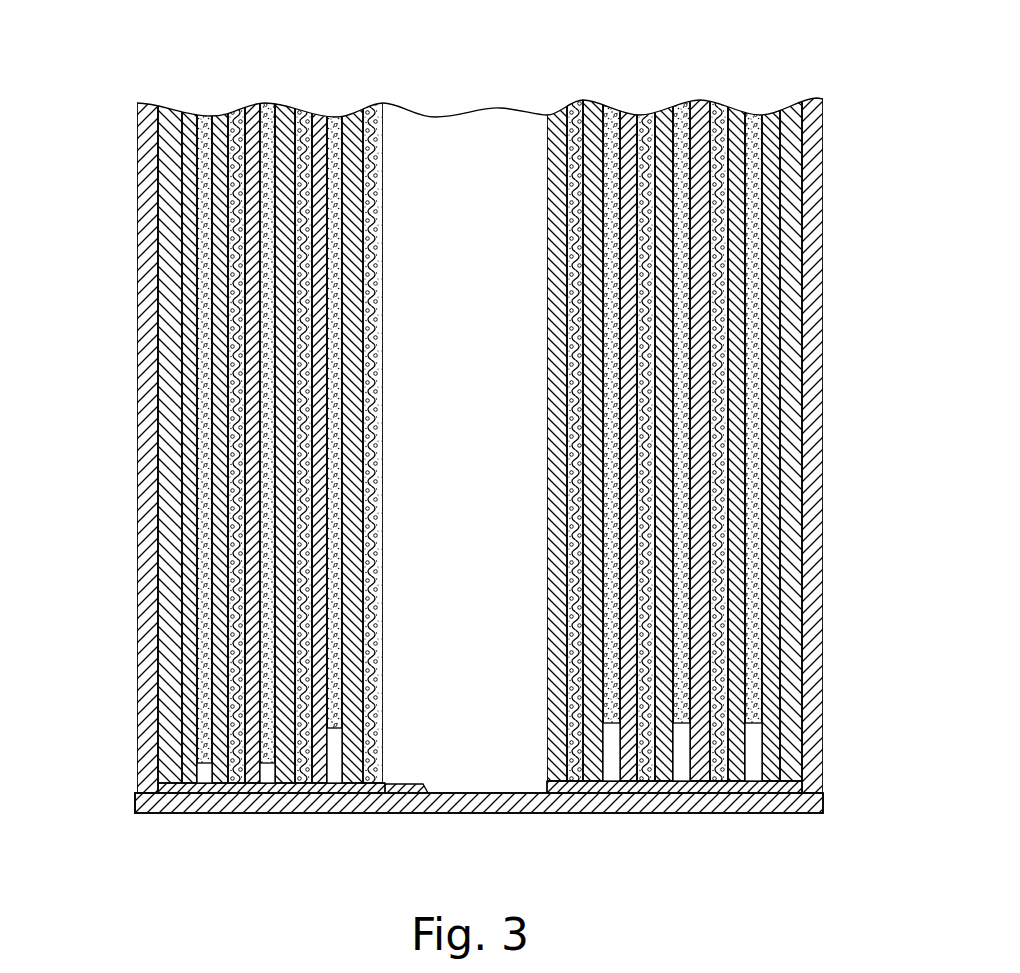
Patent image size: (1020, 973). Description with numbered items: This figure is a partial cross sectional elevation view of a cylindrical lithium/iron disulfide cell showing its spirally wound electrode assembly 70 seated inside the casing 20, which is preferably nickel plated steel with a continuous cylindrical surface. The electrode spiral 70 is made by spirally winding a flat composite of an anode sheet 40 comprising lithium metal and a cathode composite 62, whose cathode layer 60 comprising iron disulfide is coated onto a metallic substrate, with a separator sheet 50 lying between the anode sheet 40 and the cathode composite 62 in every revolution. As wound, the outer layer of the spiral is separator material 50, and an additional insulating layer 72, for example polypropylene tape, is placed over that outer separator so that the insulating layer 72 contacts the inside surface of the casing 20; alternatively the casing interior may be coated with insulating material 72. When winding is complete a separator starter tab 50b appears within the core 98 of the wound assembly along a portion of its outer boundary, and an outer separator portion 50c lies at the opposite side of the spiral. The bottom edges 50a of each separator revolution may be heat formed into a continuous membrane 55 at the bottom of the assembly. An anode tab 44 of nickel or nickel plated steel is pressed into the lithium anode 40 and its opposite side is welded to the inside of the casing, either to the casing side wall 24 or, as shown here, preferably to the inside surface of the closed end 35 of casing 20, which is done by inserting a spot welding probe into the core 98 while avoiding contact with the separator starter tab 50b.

The casing 20 is at (137, 245).
The casing side wall 24 is at (135, 540).
The closed end of casing 35 is at (657, 813).
The anode sheet 40 is at (210, 115).
The anode tab 44 is at (400, 790).
The separator sheet 50 is at (190, 110).
The bottom edges of separator 50a is at (252, 787).
The separator starter tab 50b is at (562, 98).
The outermost layer 50c is at (778, 507).
The continuous membrane 55 is at (333, 790).
The cathode sheet 60 is at (235, 115).
The cathode composite 62 is at (228, 650).
The spirally wound electrode assembly 70 is at (153, 720).
The insulating layer 72 is at (163, 330).
The core 98 is at (450, 415).